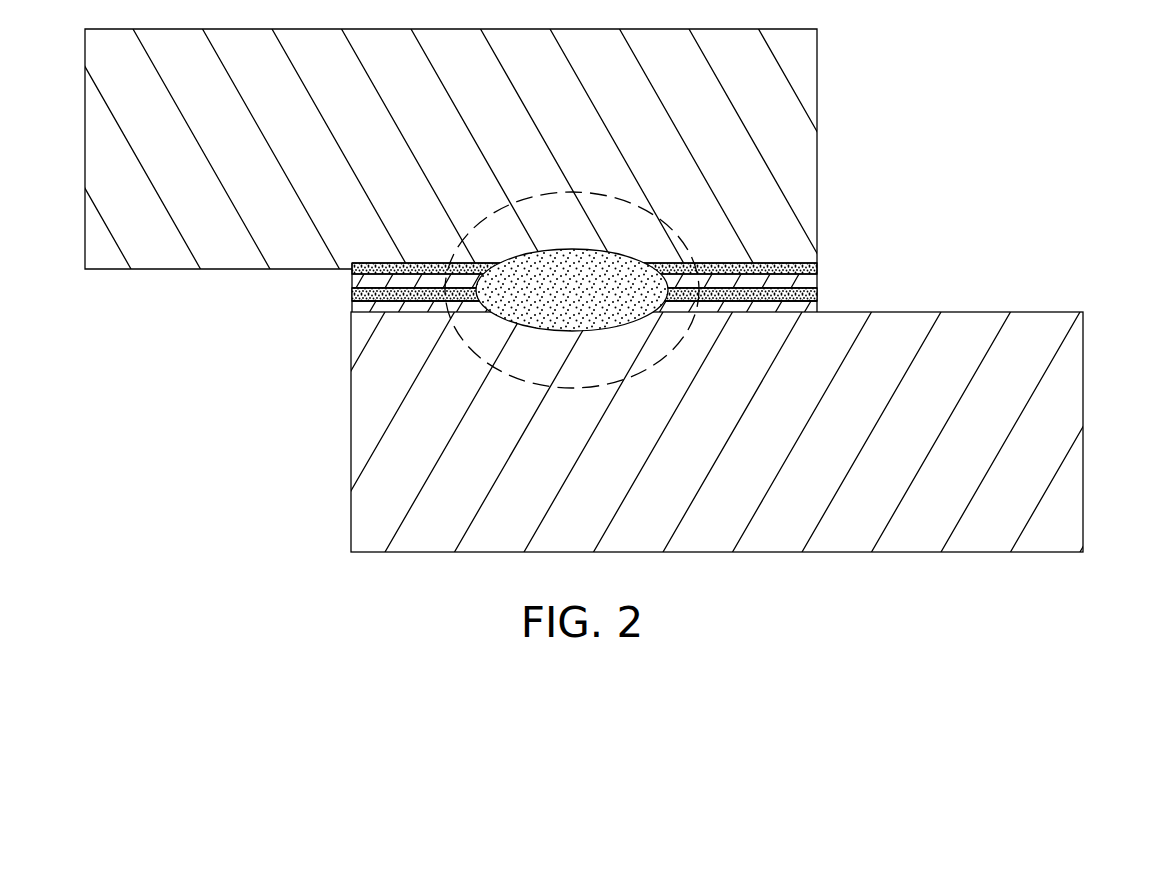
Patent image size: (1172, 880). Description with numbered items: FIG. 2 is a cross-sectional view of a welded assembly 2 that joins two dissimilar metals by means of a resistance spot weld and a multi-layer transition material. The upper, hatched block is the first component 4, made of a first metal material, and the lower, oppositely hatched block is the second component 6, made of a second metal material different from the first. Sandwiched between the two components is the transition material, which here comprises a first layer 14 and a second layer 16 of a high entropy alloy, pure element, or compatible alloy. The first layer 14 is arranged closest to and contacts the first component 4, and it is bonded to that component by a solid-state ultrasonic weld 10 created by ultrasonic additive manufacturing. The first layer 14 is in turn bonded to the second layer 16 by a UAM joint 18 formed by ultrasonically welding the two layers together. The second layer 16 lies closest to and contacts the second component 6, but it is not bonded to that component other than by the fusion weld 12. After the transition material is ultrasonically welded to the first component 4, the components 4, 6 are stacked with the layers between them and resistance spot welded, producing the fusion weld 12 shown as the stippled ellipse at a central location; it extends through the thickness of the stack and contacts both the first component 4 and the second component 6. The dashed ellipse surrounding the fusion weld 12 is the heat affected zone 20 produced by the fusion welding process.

The welded assembly 2 is at (950, 82).
The first component 4 is at (782, 84).
The second component 6 is at (1045, 420).
The ultrasonic weld 10 is at (581, 295).
The fusion weld 12 is at (507, 305).
The first layer 14 is at (372, 281).
The second layer 16 is at (372, 306).
The UAM joint 18 is at (808, 297).
The heat affected zone 20 is at (618, 193).